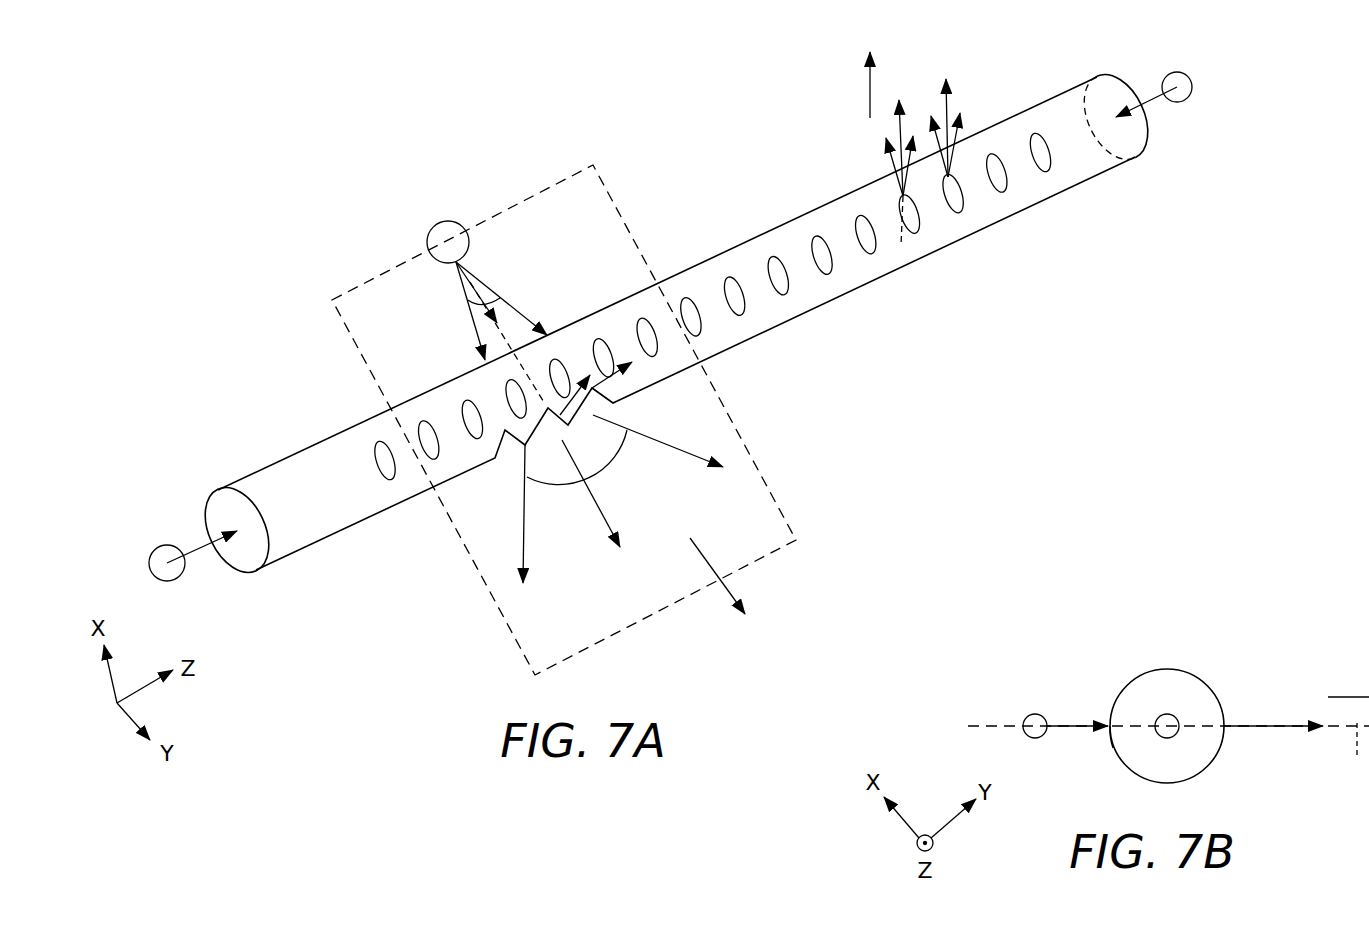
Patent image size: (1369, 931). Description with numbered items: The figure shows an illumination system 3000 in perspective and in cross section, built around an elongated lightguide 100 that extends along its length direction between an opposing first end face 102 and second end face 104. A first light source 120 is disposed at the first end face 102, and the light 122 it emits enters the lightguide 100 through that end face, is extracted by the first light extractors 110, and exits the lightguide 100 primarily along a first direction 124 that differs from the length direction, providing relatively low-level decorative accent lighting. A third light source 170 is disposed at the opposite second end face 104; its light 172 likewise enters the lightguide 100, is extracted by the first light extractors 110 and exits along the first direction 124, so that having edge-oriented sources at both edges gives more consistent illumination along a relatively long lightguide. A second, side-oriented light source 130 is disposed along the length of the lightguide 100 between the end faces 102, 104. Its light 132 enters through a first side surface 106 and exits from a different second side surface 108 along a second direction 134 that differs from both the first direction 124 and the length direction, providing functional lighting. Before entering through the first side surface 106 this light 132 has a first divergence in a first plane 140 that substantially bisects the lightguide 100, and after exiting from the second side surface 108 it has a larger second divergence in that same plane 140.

In FIG. 7A, the illumination system 3000 is at (286, 217).
In FIG. 7A, the elongated lightguide 100 is at (258, 471).
In FIG. 7A, the first end face 102 is at (203, 504).
In FIG. 7A, the second end face 104 is at (1148, 131).
In FIG. 7B, the first side surface 106 is at (1113, 748).
In FIG. 7B, the second side surface 108 is at (1217, 696).
In FIG. 7A, the first light extractors 110 is at (870, 248).
In FIG. 7A, the first light source 120 is at (151, 556).
In FIG. 7B, the first light source 120 is at (1166, 715).
In FIG. 7A, the light emitted by the first light source 122 is at (201, 552).
In FIG. 7A, the first direction 124 is at (868, 103).
In FIG. 7A, the second light source 130 is at (443, 222).
In FIG. 7B, the second light source 130 is at (1028, 717).
In FIG. 7A, the light emitted by the second light source 132 is at (470, 302).
In FIG. 7B, the light emitted by the second light source 132 is at (1067, 722).
In FIG. 7A, the second direction 134 is at (758, 596).
In FIG. 7B, the second direction 134 is at (1353, 696).
In FIG. 7A, the first plane 140 is at (358, 358).
In FIG. 7B, the first plane 140 is at (1352, 757).
In FIG. 7A, the third light source 170 is at (1192, 90).
In FIG. 7A, the light emitted by the third light source 172 is at (1153, 94).